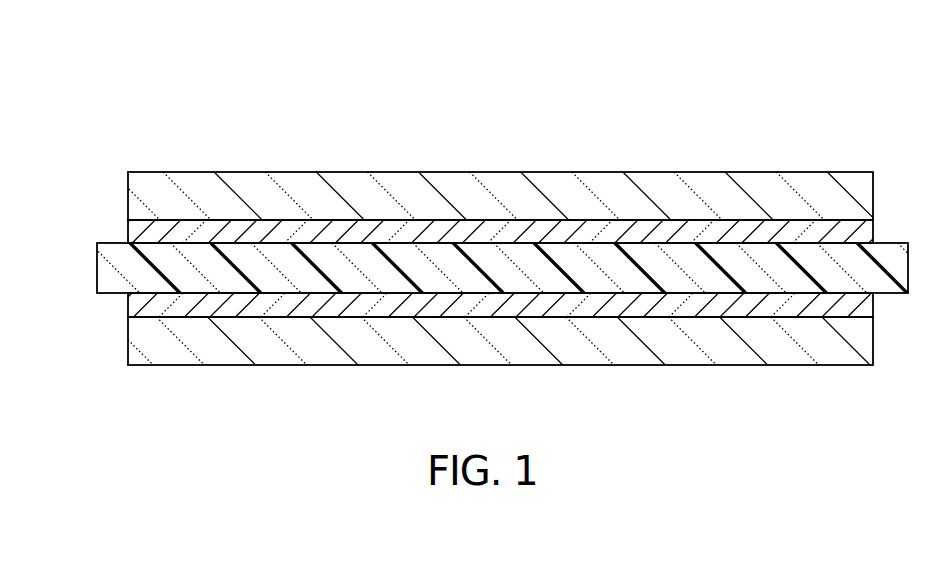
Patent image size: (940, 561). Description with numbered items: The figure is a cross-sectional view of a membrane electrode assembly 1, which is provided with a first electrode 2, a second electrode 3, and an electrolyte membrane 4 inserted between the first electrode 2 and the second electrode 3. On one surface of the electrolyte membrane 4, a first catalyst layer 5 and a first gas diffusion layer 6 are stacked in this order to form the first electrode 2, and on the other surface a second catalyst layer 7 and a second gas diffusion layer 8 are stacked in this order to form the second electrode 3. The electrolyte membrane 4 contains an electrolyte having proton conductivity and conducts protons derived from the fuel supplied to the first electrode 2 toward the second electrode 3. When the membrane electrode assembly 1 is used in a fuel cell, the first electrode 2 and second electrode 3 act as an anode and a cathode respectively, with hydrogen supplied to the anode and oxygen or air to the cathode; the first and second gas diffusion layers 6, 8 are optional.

The membrane electrode assembly 1 is at (599, 106).
The first electrode 2 is at (68, 188).
The second electrode 3 is at (68, 295).
The electrolyte membrane 4 is at (97, 268).
The first catalyst layer 5 is at (128, 235).
The first gas diffusion layer 6 is at (128, 202).
The second catalyst layer 7 is at (130, 305).
The second gas diffusion layer 8 is at (132, 343).